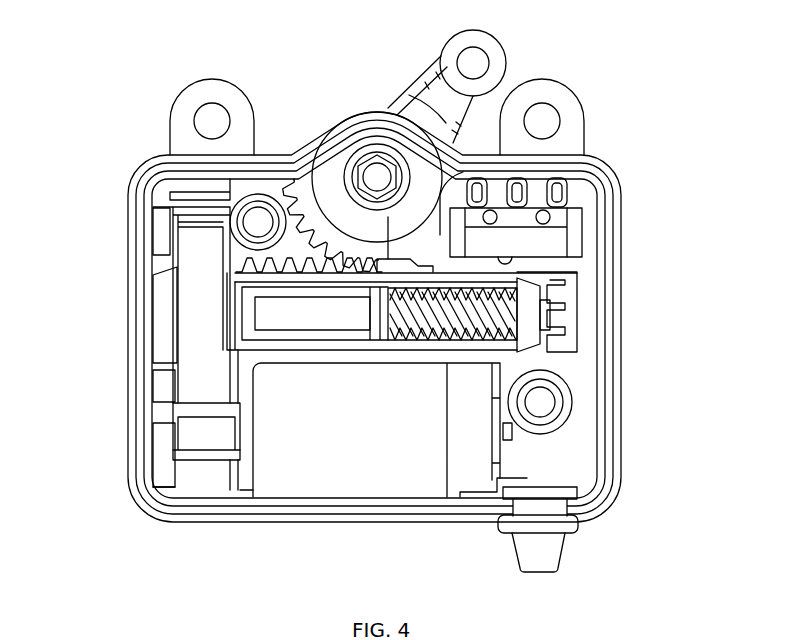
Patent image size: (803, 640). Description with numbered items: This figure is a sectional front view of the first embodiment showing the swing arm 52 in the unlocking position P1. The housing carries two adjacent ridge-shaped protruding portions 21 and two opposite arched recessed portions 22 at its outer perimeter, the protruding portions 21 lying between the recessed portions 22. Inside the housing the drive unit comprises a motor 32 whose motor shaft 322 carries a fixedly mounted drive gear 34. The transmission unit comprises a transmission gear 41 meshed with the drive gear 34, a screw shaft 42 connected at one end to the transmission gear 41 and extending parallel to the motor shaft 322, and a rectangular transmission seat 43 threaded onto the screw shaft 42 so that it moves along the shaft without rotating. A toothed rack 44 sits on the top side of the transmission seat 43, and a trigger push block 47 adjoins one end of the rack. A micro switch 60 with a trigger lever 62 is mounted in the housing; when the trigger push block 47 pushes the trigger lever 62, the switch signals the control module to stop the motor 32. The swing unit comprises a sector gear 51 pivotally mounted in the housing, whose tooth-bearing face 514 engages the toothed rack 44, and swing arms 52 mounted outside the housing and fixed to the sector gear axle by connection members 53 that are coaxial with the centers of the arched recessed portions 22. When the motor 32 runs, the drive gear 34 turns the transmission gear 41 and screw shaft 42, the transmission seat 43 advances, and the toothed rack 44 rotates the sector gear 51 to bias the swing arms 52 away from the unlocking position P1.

The ridge-shaped protruding portion 21 is at (377, 116).
The arched recessed portion 22 is at (462, 163).
The motor 32 is at (307, 477).
The motor shaft 322 is at (230, 440).
The drive gear 34 is at (197, 435).
The transmission gear 41 is at (190, 328).
The screw shaft 42 is at (473, 310).
The transmission seat 43 is at (245, 348).
The toothed rack 44 is at (253, 260).
The trigger push block 47 is at (392, 267).
The sector gear 51 is at (323, 198).
The tooth-bearing face 514 is at (280, 197).
The swing arm 52 is at (447, 61).
The connection member 53 is at (368, 170).
The micro switch 60 is at (553, 245).
The trigger lever 62 is at (510, 262).
The unlocking position P1 is at (527, 70).